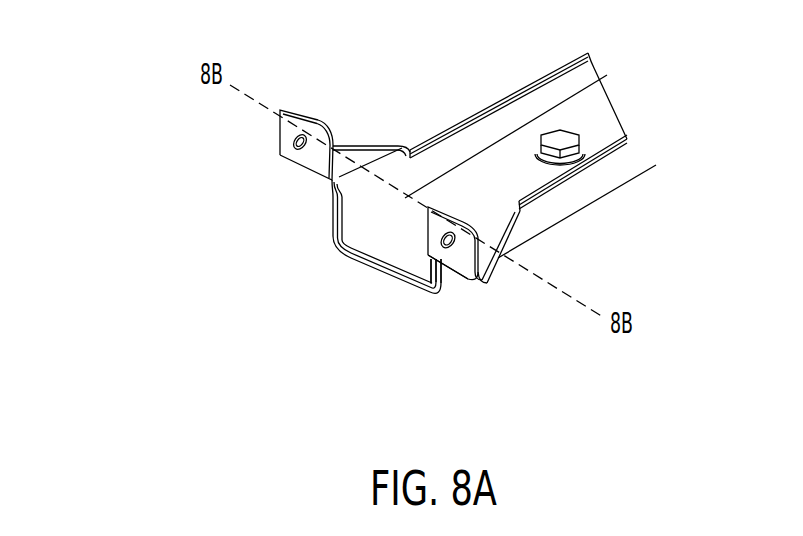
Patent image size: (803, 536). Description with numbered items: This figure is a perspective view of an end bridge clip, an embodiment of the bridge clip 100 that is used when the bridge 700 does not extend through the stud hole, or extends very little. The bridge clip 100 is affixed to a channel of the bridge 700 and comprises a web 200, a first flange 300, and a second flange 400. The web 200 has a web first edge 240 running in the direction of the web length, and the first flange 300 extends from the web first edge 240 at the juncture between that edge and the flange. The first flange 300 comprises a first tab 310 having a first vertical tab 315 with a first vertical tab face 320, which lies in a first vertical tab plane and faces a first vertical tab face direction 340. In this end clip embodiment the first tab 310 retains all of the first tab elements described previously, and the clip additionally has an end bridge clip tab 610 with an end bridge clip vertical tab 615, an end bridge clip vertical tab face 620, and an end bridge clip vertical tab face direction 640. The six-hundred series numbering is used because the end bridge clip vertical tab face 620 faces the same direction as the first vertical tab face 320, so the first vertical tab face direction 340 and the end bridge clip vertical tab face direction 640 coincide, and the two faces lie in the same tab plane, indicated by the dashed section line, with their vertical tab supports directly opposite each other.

The bridge clip 100 is at (87, 127).
The web 200 is at (612, 110).
The web first edge 240 is at (504, 116).
The first flange 300 is at (607, 56).
The first tab 310 is at (350, 105).
The first vertical tab 315 is at (299, 96).
The first vertical tab face 320 is at (286, 172).
The first vertical tab face direction 340 is at (262, 138).
The second flange 400 is at (641, 131).
The end bridge clip tab 610 is at (514, 241).
The end bridge clip vertical tab 615 is at (452, 188).
The end bridge clip vertical tab face 620 is at (466, 290).
The end bridge clip vertical tab face direction 640 is at (405, 231).
The bridge 700 is at (640, 182).